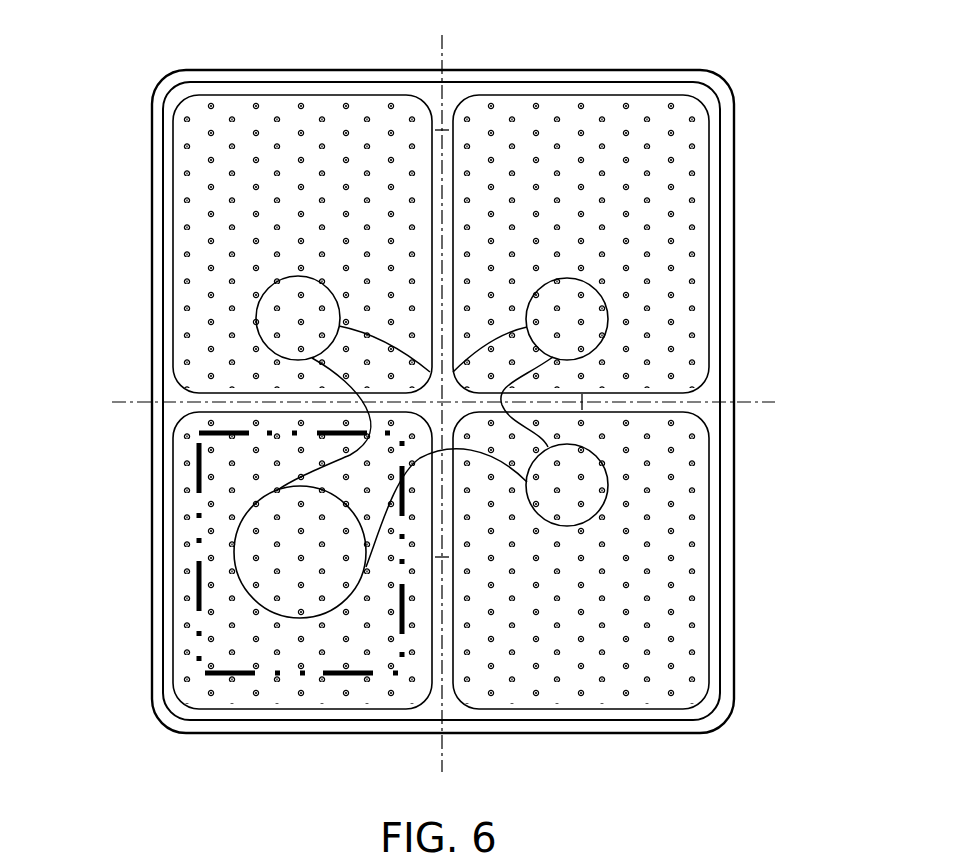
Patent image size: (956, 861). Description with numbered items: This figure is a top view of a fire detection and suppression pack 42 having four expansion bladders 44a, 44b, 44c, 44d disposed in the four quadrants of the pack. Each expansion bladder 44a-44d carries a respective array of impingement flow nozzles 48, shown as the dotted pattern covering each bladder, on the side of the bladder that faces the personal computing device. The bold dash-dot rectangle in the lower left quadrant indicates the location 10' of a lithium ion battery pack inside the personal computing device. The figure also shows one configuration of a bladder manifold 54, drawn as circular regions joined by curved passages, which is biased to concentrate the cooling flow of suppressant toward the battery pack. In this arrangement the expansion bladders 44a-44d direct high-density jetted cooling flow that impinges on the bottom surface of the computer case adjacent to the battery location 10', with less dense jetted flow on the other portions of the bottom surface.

The tray body 42 is at (528, 71).
The expansion bladder 44a is at (192, 706).
The expansion bladder 44b is at (697, 702).
The expansion bladder 44c is at (693, 97).
The expansion bladder 44d is at (190, 97).
The impingement flow nozzles 48 is at (188, 202).
The bladder manifold 54 is at (597, 285).
The location of lithium ion battery pack 10' is at (222, 553).